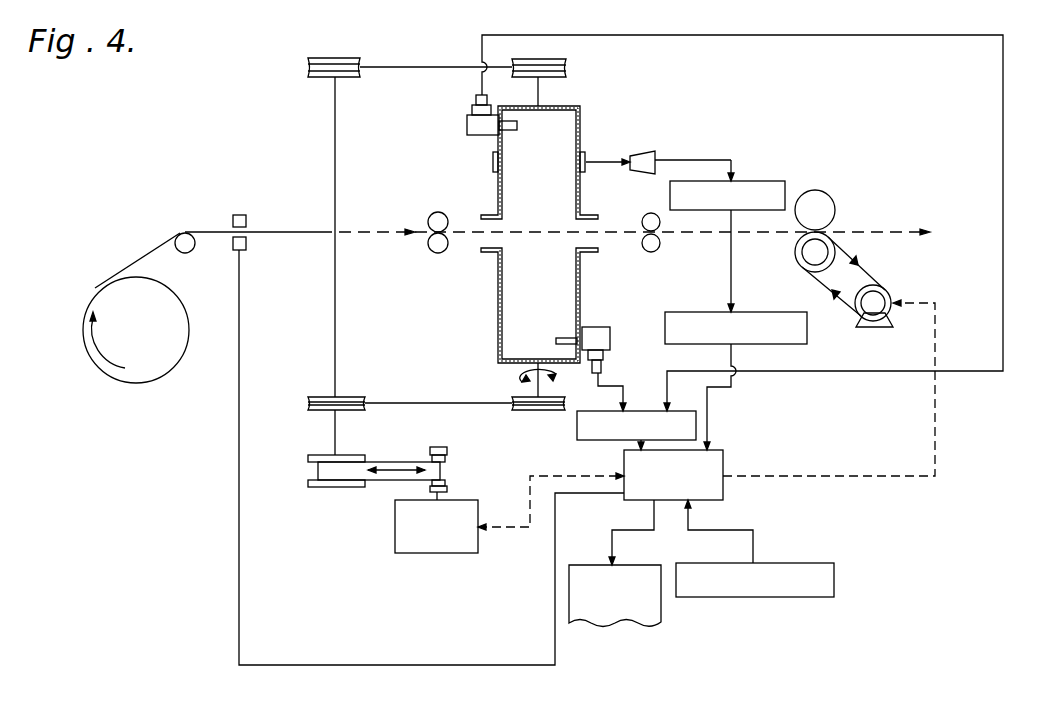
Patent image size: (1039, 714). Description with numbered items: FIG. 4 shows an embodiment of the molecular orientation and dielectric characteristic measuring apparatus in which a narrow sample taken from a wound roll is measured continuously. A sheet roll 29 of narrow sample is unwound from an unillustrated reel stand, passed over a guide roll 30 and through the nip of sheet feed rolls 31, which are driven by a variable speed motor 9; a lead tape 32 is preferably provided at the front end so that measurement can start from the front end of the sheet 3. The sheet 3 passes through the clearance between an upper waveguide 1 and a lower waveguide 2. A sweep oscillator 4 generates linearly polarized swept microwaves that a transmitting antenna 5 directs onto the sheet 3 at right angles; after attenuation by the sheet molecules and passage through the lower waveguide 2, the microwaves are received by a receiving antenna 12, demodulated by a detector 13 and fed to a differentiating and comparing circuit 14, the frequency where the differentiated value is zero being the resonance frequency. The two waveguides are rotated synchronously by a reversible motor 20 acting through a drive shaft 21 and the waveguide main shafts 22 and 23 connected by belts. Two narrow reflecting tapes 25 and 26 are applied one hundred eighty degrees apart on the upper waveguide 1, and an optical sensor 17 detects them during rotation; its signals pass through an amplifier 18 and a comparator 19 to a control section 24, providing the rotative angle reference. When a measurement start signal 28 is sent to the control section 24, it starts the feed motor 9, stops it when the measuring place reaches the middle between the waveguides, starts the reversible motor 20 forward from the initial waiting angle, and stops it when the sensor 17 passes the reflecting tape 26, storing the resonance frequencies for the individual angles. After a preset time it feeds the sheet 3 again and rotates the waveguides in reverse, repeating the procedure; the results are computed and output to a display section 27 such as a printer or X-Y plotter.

The upper waveguide 1 is at (582, 128).
The lower waveguide 2 is at (580, 287).
The sheet 3 is at (388, 232).
The sweep oscillator 4 is at (472, 128).
The transmitting antenna 5 is at (517, 126).
The variable speed motor 9 is at (886, 291).
The receiving antenna 12 is at (556, 340).
The detector 13 is at (610, 328).
The differentiating and comparing circuit 14 is at (605, 411).
The optical sensor 17 is at (648, 154).
The amplifier 18 is at (785, 181).
The comparator 19 is at (807, 340).
The reversible motor 20 is at (395, 553).
The drive shaft 21 is at (337, 345).
The waveguide main shaft 22 is at (540, 92).
The waveguide main shaft 23 is at (515, 378).
The control section 24 is at (723, 450).
The reflecting tape 25 is at (586, 150).
The reflecting tape 26 is at (492, 166).
The display section 27 is at (640, 626).
The measurement start signal 28 is at (834, 563).
The sheet roll 29 is at (656, 250).
The guide roll 30 is at (190, 252).
The sheet feed rolls 31 is at (825, 205).
The lead tape 32 is at (930, 228).